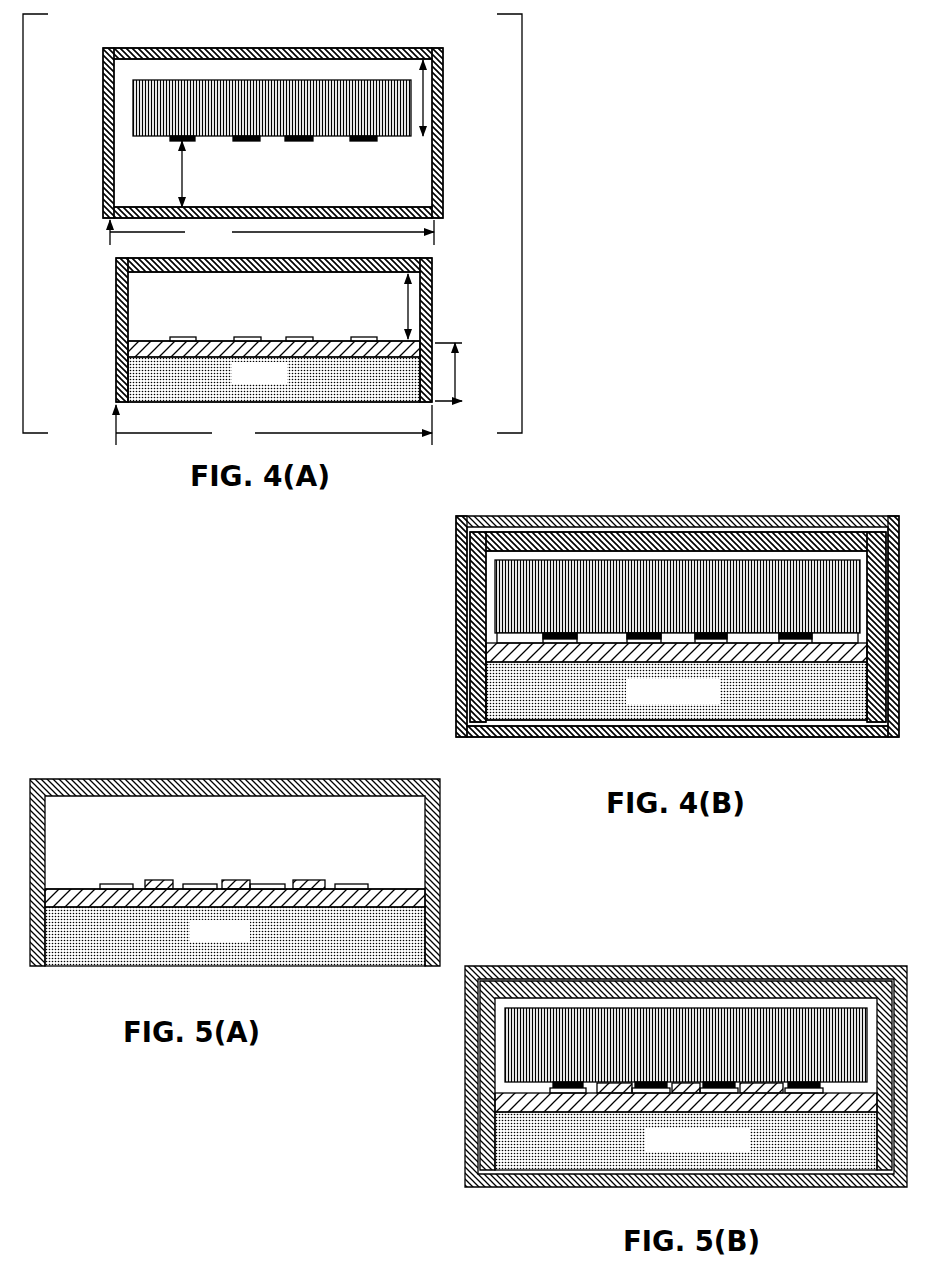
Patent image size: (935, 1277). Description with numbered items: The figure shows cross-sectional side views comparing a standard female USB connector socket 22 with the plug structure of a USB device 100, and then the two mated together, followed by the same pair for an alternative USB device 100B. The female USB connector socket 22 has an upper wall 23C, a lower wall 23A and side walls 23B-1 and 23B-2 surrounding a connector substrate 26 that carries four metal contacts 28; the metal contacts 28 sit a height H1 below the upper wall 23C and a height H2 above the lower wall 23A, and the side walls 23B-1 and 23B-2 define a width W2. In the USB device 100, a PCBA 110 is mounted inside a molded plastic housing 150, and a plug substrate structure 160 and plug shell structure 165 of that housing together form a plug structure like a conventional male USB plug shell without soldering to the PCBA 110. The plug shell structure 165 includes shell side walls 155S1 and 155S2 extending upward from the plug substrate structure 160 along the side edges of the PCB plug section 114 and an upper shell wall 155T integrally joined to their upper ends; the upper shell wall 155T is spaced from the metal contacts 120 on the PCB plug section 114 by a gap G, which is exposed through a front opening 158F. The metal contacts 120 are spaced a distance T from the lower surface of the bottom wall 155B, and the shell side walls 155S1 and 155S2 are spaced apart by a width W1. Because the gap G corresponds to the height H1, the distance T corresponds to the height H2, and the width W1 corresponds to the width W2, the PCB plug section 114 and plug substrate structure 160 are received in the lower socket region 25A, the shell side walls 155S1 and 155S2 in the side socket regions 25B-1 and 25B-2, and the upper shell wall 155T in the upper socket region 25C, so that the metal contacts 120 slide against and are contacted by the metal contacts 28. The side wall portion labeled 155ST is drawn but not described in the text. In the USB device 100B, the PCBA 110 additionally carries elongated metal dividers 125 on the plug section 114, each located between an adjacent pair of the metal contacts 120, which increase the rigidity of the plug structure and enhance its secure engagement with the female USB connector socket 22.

In FIG. 4A, the standard female USB connector socket 22 is at (133, 52).
In FIG. 4B, the standard female USB connector socket 22 is at (559, 519).
In FIG. 5B, the standard female USB connector socket 22 is at (616, 966).
In FIG. 4A, the lower wall 23A is at (232, 212).
In FIG. 4B, the lower wall 23A is at (645, 729).
In FIG. 4A, the side wall 23B-1 is at (106, 147).
In FIG. 4B, the side wall 23B-1 is at (460, 549).
In FIG. 4A, the side wall 23B-2 is at (455, 48).
In FIG. 4B, the side wall 23B-2 is at (899, 552).
In FIG. 4A, the upper wall 23C is at (361, 53).
In FIG. 4A, the lower socket region 25A is at (345, 191).
In FIG. 4B, the lower socket region 25A is at (716, 701).
In FIG. 5B, the lower socket region 25A is at (735, 1150).
In FIG. 4B, the side socket region 25B-1 is at (394, 627).
In FIG. 4B, the side socket region 25B-2 is at (804, 583).
In FIG. 4B, the upper socket region 25C is at (676, 508).
In FIG. 4A, the connector substrate 26 is at (196, 96).
In FIG. 4B, the connector substrate 26 is at (634, 565).
In FIG. 5B, the connector substrate 26 is at (686, 1045).
In FIG. 4A, the metal contacts 28 is at (302, 142).
In FIG. 4B, the metal contacts 28 is at (783, 634).
In FIG. 5B, the metal contacts 28 is at (795, 1082).
In FIG. 4B, the USB device 100 is at (605, 605).
In FIG. 5A, the USB device 100B is at (228, 865).
In FIG. 5B, the USB device 100B is at (686, 1074).
In FIG. 4A, the PCBA 110 is at (165, 337).
In FIG. 4B, the PCBA 110 is at (676, 652).
In FIG. 5A, the PCBA 110 is at (84, 888).
In FIG. 5B, the PCBA 110 is at (686, 1102).
In FIG. 4A, the PCB plug section 114 is at (394, 339).
In FIG. 5A, the PCB plug section 114 is at (390, 889).
In FIG. 4A, the metal contacts 120 is at (320, 339).
In FIG. 4B, the metal contacts 120 is at (789, 642).
In FIG. 5A, the metal contacts 120 is at (345, 889).
In FIG. 5B, the metal contacts 120 is at (798, 1093).
In FIG. 5A, the metal dividers 125 is at (305, 880).
In FIG. 5B, the metal dividers 125 is at (760, 1093).
In FIG. 4A, the housing 150 is at (275, 345).
In FIG. 4A, the upper shell wall 155T is at (425, 258).
In FIG. 4B, the upper shell wall 155T is at (623, 544).
In FIG. 4A, the shell side wall 155S1 is at (117, 312).
In FIG. 4B, the shell side wall 155S1 is at (479, 585).
In FIG. 4B, the shell side wall 155S2 is at (875, 584).
In FIG. 4A, the side wall of frame 155ST is at (433, 318).
In FIG. 4A, the bottom wall 155B is at (290, 403).
In FIG. 4B, the bottom wall 155B is at (598, 713).
In FIG. 4A, the front opening 158F is at (240, 300).
In FIG. 5A, the front opening 158F is at (216, 848).
In FIG. 4A, the plug substrate structure 160 is at (278, 383).
In FIG. 4B, the plug substrate structure 160 is at (676, 691).
In FIG. 5A, the plug substrate structure 160 is at (238, 941).
In FIG. 5B, the plug substrate structure 160 is at (686, 1141).
In FIG. 4A, the plug shell structure 165 is at (114, 285).
In FIG. 4B, the plug shell structure 165 is at (471, 681).
In FIG. 5A, the plug shell structure 165 is at (232, 778).
In FIG. 5B, the plug shell structure 165 is at (686, 1075).
In FIG. 4A, the height H1 is at (434, 102).
In FIG. 4A, the height H2 is at (179, 175).
In FIG. 4A, the width W1 is at (274, 427).
In FIG. 4A, the width W2 is at (272, 232).
In FIG. 4A, the gap G is at (404, 292).
In FIG. 4A, the distance T is at (457, 371).